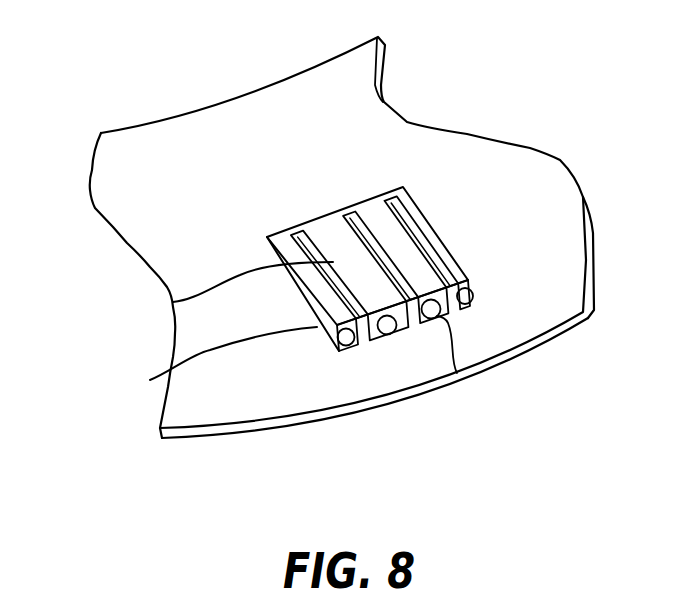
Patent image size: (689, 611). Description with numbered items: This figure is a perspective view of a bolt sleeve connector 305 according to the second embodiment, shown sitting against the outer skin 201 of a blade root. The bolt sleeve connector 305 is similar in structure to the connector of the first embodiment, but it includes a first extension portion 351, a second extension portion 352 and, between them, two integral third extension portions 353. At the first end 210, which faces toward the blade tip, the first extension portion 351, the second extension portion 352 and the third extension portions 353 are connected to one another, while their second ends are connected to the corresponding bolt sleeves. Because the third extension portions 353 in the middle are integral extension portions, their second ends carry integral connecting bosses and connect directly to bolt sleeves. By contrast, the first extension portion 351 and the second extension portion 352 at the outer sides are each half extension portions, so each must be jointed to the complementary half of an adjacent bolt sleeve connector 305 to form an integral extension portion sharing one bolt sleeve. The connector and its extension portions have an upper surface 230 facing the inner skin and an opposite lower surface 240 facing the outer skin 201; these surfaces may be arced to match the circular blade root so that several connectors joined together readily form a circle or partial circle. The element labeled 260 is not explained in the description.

The outer skin 201 is at (178, 158).
The bolt sleeve connector 305 is at (452, 200).
The first extension portion 351 is at (282, 248).
The first end 210 is at (360, 225).
The second extension portion 352 is at (445, 260).
The third extension portion 353 is at (363, 303).
The upper surface 230 is at (173, 302).
The lower surface 240 is at (150, 380).
The conductor lead 260 is at (457, 373).